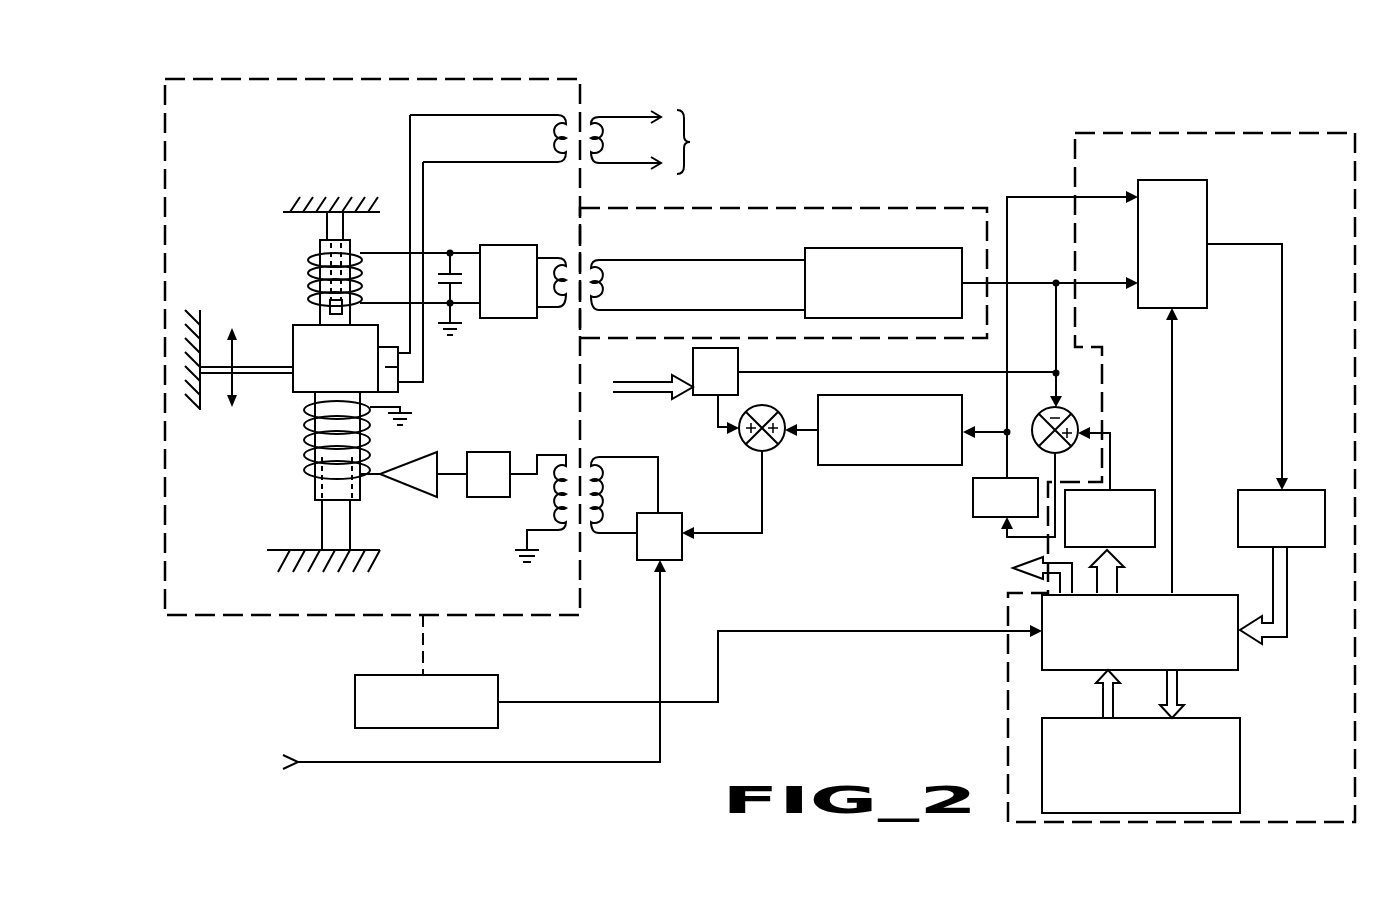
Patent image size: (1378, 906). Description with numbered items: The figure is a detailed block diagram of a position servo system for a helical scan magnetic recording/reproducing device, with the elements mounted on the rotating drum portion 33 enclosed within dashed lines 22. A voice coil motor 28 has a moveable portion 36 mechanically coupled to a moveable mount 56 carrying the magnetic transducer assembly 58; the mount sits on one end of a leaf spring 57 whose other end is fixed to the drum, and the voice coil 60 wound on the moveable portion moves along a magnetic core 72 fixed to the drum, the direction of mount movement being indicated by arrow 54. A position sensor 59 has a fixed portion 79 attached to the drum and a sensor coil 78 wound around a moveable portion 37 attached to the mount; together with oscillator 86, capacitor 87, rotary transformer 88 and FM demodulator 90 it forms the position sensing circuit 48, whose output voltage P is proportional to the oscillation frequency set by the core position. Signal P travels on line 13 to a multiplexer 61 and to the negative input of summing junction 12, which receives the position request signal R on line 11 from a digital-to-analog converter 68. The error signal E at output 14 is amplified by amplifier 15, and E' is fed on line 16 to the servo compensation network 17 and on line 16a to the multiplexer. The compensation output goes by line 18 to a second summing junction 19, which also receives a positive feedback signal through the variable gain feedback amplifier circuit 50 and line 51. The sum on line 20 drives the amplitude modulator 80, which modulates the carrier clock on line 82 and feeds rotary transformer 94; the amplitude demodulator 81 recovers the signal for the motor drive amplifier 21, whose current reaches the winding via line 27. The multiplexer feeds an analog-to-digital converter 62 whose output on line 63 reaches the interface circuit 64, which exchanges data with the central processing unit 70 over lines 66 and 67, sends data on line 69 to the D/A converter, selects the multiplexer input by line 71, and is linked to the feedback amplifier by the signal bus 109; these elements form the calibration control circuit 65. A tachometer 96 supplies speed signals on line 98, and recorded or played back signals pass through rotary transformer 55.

The line 11 is at (1110, 445).
The summing junction 12 is at (1072, 408).
The line 13 is at (1020, 283).
The output 14 is at (1052, 470).
The amplifier 15 is at (973, 505).
The line 16 is at (995, 440).
The line 16a is at (1100, 197).
The servo compensation network 17 is at (885, 465).
The line 18 is at (808, 432).
The second summing junction 19 is at (745, 445).
The line 20 is at (745, 533).
The motor drive amplifier 21 is at (415, 483).
The dashed lines 22 is at (395, 64).
The line 27 is at (392, 468).
The voice coil motor 28 is at (290, 438).
The rotating drum portion 33 is at (262, 98).
The moveable portion 36 is at (315, 478).
The moveable portion 37 is at (350, 245).
The position sensing circuit 48 is at (872, 208).
The variable gain feedback amplifier circuit 50 is at (738, 355).
The line 51 is at (734, 412).
The direction of movement arrow 54 is at (232, 405).
The rotary transformer 55 is at (585, 122).
The moveable mount 56 is at (373, 325).
The leaf spring 57 is at (213, 366).
The magnetic transducer assembly 58 is at (398, 368).
The position sensor 59 is at (298, 266).
The voice coil 60 is at (308, 425).
The multiplexer 61 is at (1207, 197).
The analog-to-digital converter 62 is at (1313, 490).
The line 63 is at (1273, 600).
The interface circuit 64 is at (1203, 602).
The calibration control circuit 65 is at (1255, 140).
The line 66 is at (1096, 697).
The line 67 is at (1184, 690).
The digital-to-analog converter 68 is at (1130, 490).
The line 69 is at (1117, 586).
The central processing unit 70 is at (1052, 732).
The line 71 is at (1175, 360).
The magnetic core 72 is at (325, 518).
The sensor coil 78 is at (310, 293).
The fixed portion 79 is at (327, 229).
The amplitude modulator 80 is at (682, 548).
The amplitude demodulator 81 is at (500, 452).
The line 82 is at (333, 762).
The oscillator 86 is at (520, 250).
The capacitor 87 is at (458, 268).
The rotary transformer 88 is at (590, 265).
The FM demodulator 90 is at (912, 252).
The rotary transformer 94 is at (585, 535).
The tachometer 96 is at (458, 683).
The line 98 is at (775, 630).
The signal bus to/from amplifier 50 109 is at (657, 393).